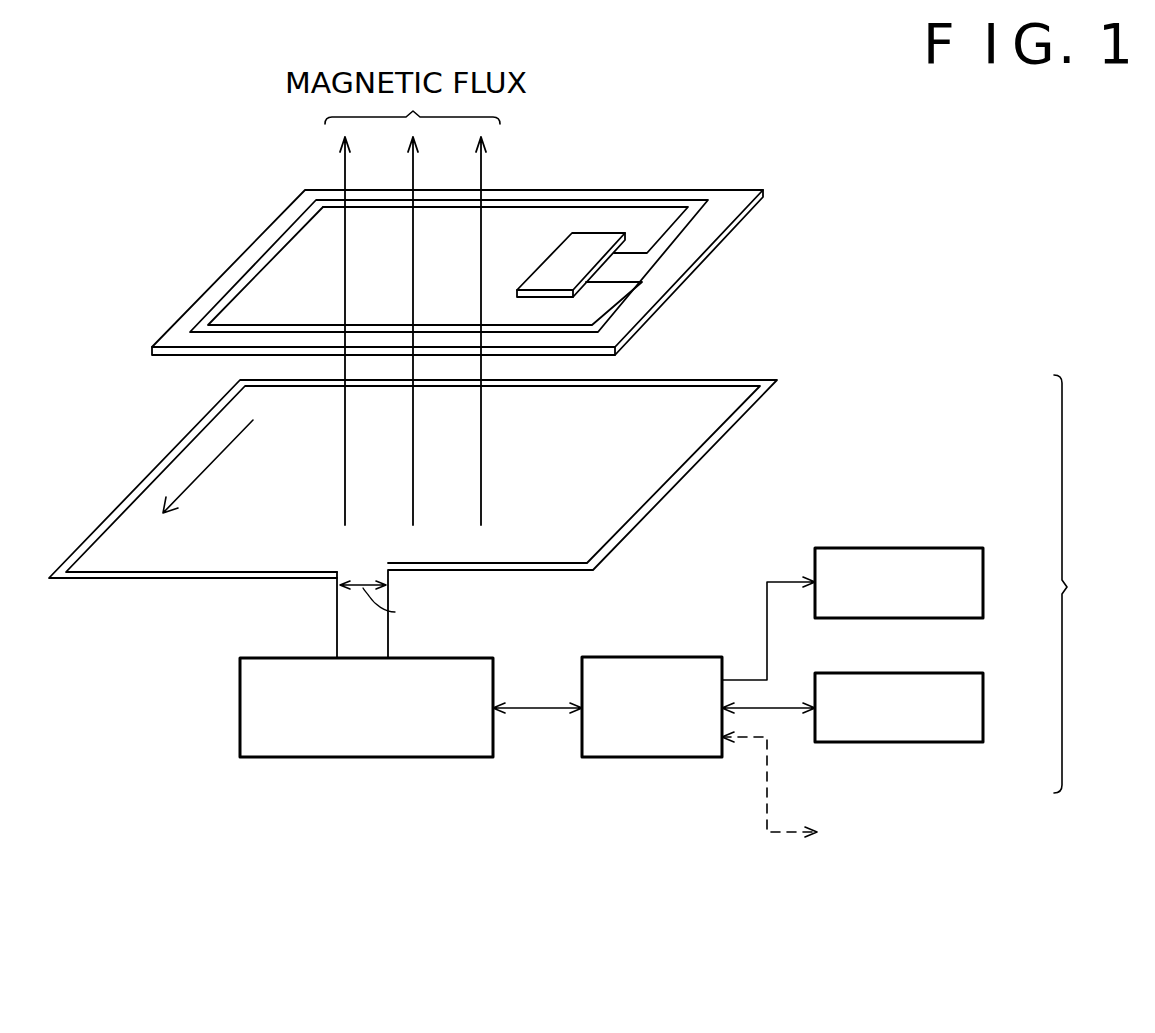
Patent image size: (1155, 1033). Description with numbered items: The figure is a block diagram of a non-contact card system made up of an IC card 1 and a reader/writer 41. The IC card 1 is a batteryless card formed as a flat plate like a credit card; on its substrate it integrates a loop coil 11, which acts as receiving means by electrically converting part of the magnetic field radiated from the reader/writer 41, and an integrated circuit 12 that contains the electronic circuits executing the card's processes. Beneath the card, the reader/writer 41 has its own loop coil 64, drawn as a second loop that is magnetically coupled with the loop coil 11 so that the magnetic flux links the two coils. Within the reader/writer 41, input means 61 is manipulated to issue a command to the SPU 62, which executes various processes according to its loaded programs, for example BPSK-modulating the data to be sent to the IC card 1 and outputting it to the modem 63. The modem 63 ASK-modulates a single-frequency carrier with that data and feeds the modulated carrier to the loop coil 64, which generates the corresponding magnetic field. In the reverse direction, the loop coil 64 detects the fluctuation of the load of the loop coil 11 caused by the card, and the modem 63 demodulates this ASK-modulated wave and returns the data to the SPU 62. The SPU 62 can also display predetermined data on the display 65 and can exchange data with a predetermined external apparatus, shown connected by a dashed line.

The IC card 1 is at (746, 190).
The loop coil 11 is at (588, 200).
The integrated circuit 12 is at (615, 233).
The reader/writer 41 is at (677, 626).
The input means 61 is at (955, 673).
The SPU 62 is at (683, 757).
The modem 63 is at (397, 757).
The loop coil 64 is at (170, 598).
The display 65 is at (962, 548).